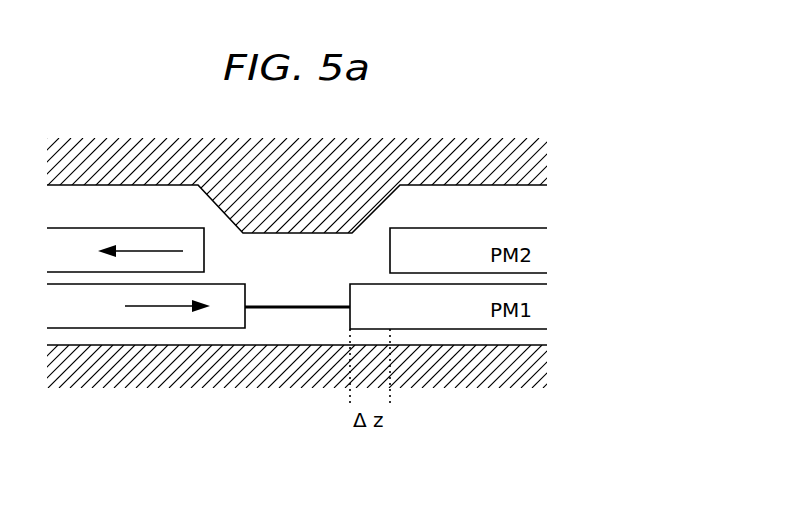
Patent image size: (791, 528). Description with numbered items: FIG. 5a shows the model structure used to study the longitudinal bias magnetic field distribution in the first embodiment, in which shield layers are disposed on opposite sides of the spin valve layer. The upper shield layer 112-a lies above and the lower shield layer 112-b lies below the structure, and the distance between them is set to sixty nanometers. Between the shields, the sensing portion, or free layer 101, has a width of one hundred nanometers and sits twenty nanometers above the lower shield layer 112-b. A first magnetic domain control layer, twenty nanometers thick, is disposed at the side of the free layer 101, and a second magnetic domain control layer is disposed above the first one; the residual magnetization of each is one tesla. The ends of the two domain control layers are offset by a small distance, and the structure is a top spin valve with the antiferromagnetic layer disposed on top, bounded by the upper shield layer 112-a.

The upper shield layer 112-a is at (530, 157).
The lower shield layer 112-b is at (528, 373).
The free layer 101 is at (285, 307).